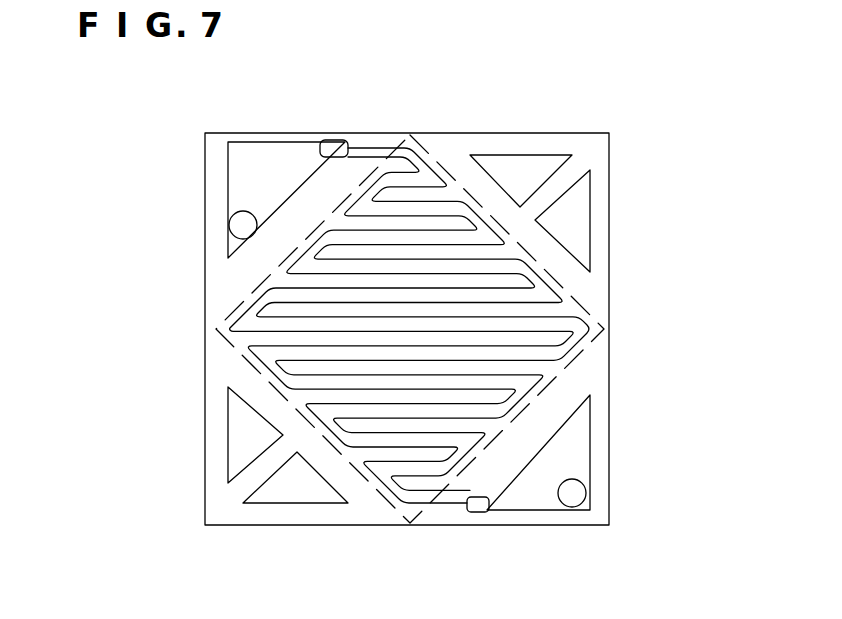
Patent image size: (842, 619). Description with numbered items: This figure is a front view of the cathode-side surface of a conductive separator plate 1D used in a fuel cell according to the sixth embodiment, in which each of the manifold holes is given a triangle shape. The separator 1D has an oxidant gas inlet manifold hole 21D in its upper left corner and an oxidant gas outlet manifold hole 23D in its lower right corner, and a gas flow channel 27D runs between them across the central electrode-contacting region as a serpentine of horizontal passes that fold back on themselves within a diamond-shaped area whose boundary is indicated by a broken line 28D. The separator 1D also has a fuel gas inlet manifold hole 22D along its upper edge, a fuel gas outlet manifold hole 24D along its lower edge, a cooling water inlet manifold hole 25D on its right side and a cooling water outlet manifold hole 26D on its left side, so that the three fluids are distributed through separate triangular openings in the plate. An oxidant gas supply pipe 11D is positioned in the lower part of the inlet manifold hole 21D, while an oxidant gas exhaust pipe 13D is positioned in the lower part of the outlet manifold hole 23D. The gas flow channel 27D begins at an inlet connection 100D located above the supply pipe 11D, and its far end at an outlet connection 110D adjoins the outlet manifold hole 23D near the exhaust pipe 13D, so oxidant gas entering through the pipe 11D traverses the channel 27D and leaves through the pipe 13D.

The separator 1D is at (594, 133).
The gas flow channel 27D is at (377, 148).
The heating region boundary 28D is at (583, 303).
The inlet connection 100D is at (337, 152).
The second terminal pad 110D is at (480, 512).
The oxidant gas inlet manifold hole 21D is at (228, 162).
The fuel gas inlet manifold hole 22D is at (522, 155).
The oxidant gas outlet manifold hole 23D is at (590, 423).
The fuel gas outlet manifold hole 24D is at (295, 503).
The cooling water inlet manifold hole 25D is at (590, 212).
The cooling water outlet manifold hole 26D is at (228, 440).
The oxidant gas supply pipe 11D is at (243, 226).
The oxidant gas exhaust pipe 13D is at (572, 493).